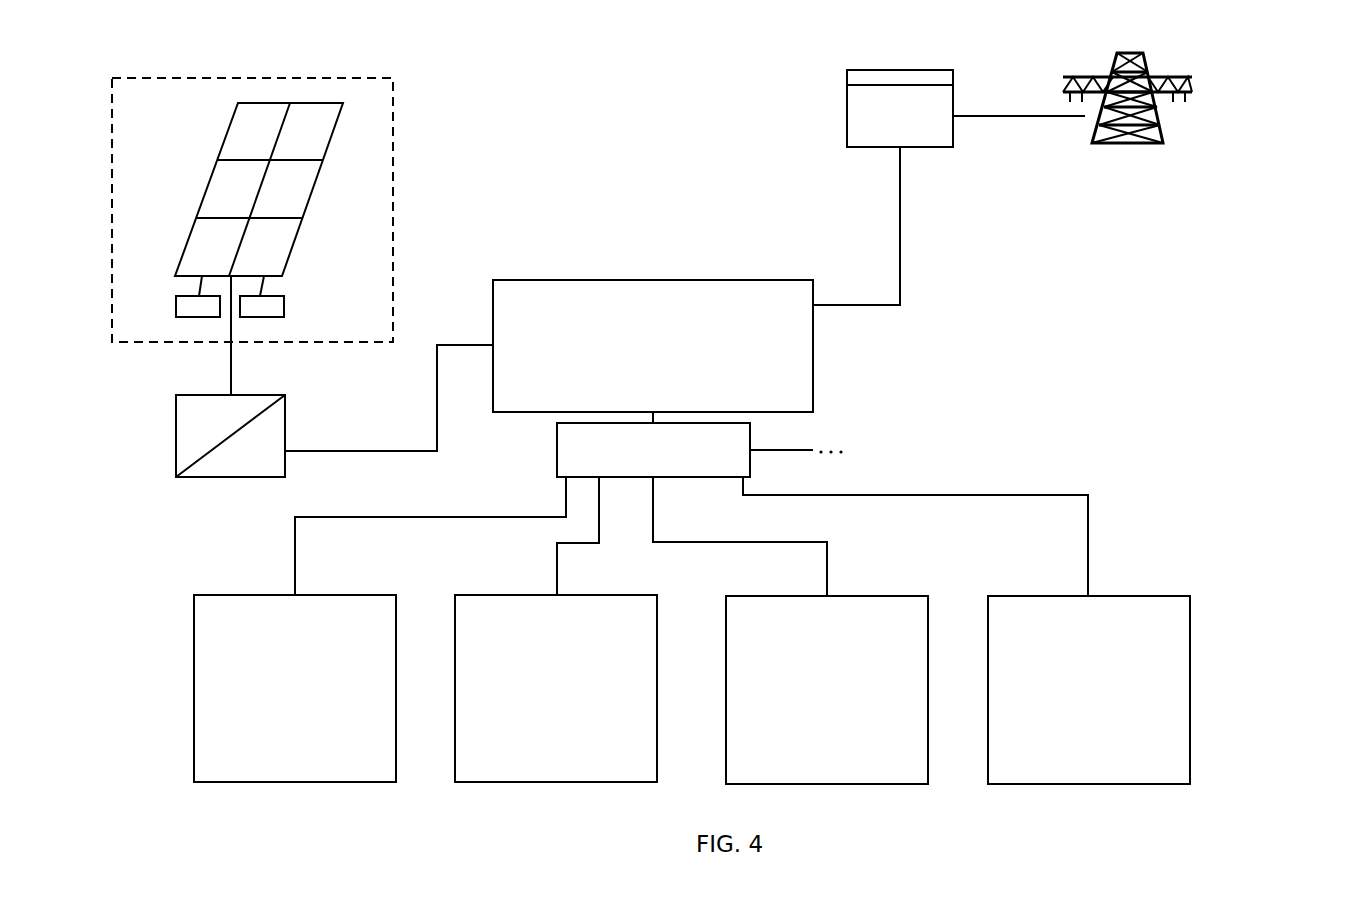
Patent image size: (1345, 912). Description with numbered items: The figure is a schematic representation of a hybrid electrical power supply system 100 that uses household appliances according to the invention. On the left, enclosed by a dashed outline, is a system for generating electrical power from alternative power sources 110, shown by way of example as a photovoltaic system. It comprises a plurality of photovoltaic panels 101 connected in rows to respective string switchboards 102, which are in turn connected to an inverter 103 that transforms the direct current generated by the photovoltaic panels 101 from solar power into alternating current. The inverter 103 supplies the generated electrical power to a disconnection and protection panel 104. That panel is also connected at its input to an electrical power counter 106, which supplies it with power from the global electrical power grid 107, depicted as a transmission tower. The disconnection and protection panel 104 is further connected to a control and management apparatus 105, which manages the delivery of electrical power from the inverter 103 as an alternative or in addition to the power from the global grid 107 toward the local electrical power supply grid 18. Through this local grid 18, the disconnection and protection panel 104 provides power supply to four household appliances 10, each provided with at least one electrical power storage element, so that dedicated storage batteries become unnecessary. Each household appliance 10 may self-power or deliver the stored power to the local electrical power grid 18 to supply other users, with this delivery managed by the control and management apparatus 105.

The hybrid electrical power supply system 100 is at (621, 120).
The system for generating electrical power from alternative power sources 110 is at (145, 78).
The photovoltaic panels 101 is at (303, 108).
The string switchboards 102 is at (267, 303).
The inverter 103 is at (252, 402).
The disconnection and protection panel 104 is at (617, 297).
The control and management apparatus 105 is at (653, 450).
The electrical power counter 106 is at (863, 117).
The global electrical power grid 107 is at (1180, 125).
The local electrical power supply grid 18 is at (1155, 526).
The household appliance 10 is at (692, 689).